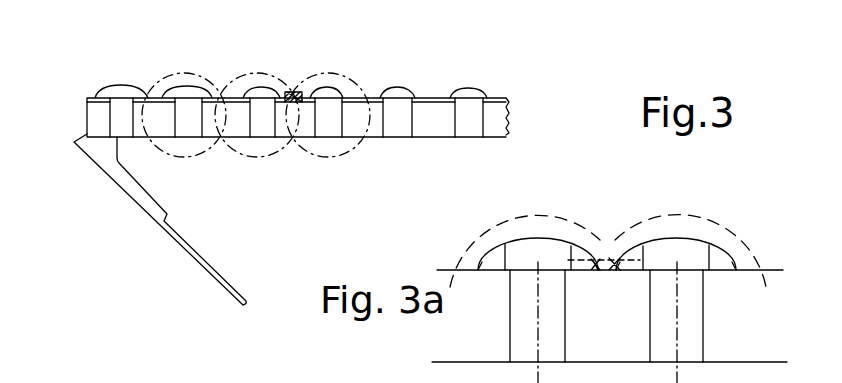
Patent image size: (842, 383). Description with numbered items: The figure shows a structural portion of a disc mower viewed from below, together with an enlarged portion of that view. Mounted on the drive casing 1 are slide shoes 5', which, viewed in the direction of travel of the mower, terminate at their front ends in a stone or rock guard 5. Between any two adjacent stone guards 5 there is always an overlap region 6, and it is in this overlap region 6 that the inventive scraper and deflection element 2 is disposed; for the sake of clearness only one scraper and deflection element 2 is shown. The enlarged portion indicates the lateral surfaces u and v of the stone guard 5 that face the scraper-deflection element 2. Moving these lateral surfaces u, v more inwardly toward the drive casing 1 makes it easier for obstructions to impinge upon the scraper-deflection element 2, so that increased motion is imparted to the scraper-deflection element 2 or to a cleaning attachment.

In FIG. 3, the drive casing 1 is at (499, 123).
In FIG. 3, the scraper and deflection element 2 is at (297, 91).
In FIG. 3A, the scraper and deflection element 2 is at (614, 263).
In FIG. 3, the stone guard 5 is at (153, 68).
In FIG. 3, the slide shoe 5' is at (301, 142).
In FIG. 3, the overlap region 6 is at (236, 87).
In FIG. 3A, the overlap region 6 is at (608, 253).
In FIG. 3A, the lateral surface of stone guard u is at (495, 270).
In FIG. 3A, the lateral surface of stone guard v is at (627, 272).